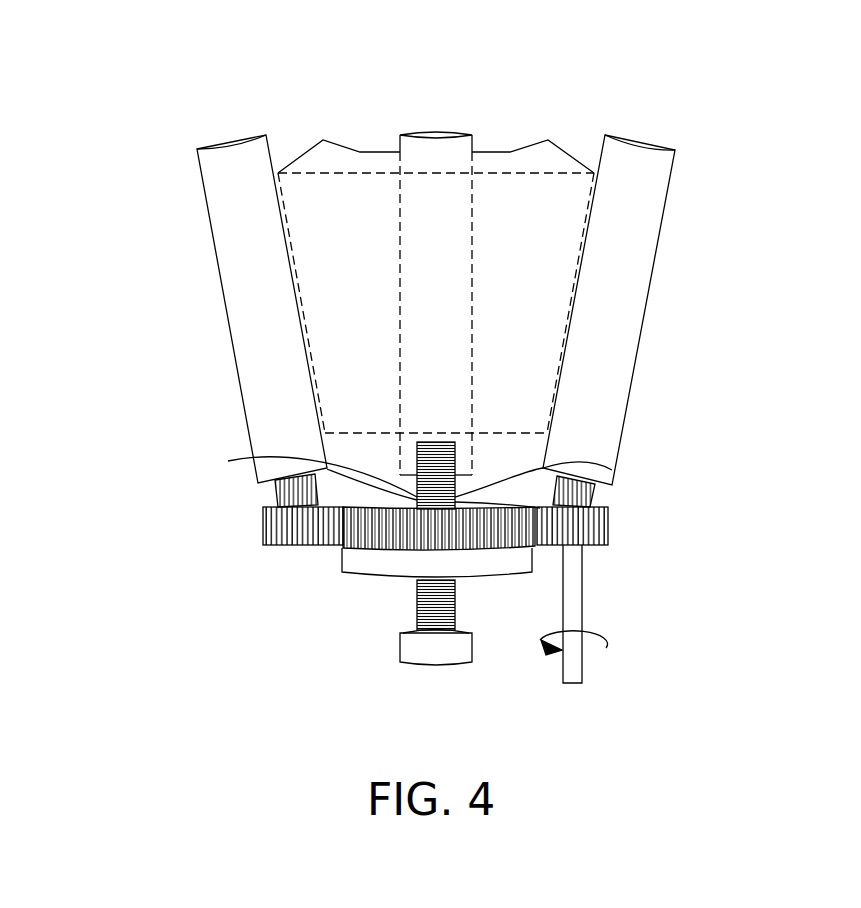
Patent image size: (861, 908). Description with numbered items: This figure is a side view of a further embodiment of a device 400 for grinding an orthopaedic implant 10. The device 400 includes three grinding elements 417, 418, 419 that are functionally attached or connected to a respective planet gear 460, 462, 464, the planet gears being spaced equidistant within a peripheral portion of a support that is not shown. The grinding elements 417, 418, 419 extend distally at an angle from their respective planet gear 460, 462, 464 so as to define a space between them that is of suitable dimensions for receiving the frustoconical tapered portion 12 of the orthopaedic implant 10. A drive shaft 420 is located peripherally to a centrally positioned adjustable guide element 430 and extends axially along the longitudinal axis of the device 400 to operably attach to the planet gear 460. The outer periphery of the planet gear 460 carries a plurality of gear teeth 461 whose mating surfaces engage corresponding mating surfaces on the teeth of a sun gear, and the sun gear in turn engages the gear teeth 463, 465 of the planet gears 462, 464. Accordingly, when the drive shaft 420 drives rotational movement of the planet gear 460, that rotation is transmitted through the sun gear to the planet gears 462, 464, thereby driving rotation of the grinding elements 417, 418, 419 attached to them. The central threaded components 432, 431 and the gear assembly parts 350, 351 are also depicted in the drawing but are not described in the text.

The device 400 is at (124, 65).
The orthopaedic implant 10 is at (552, 78).
The frustoconical tapered portion 12 is at (333, 220).
The grinding element 419 is at (398, 142).
The grinding element 418 is at (212, 228).
The grinding element 417 is at (663, 218).
The upper threaded fastener 432 is at (455, 450).
The gear teeth 465 is at (303, 474).
The planet gear 464 is at (612, 470).
The gear teeth 463 is at (273, 536).
The gear teeth 461 is at (599, 547).
The planet gear 462 is at (263, 522).
The planet gear 460 is at (609, 522).
The central gear 350 is at (477, 543).
The gear hub 351 is at (505, 528).
The lower threaded shaft 431 is at (417, 598).
The adjustable guide element 430 is at (422, 663).
The drive shaft 420 is at (583, 667).